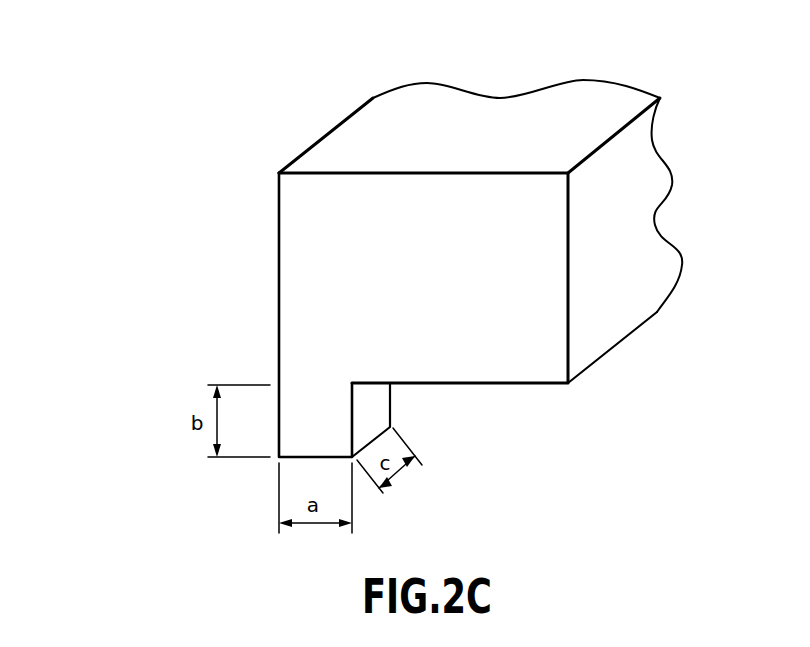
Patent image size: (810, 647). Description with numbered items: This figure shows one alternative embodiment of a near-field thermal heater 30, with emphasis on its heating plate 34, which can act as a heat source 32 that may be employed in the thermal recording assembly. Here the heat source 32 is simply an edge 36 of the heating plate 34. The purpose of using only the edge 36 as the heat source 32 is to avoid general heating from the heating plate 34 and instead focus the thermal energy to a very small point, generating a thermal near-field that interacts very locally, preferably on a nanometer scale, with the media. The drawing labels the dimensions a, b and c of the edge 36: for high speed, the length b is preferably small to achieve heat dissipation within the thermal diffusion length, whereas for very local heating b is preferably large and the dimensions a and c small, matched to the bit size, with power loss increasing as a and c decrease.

The block / workpiece 30 is at (504, 62).
The heat source 32 is at (410, 411).
The heating plate 34 is at (279, 263).
The edge 36 is at (333, 429).